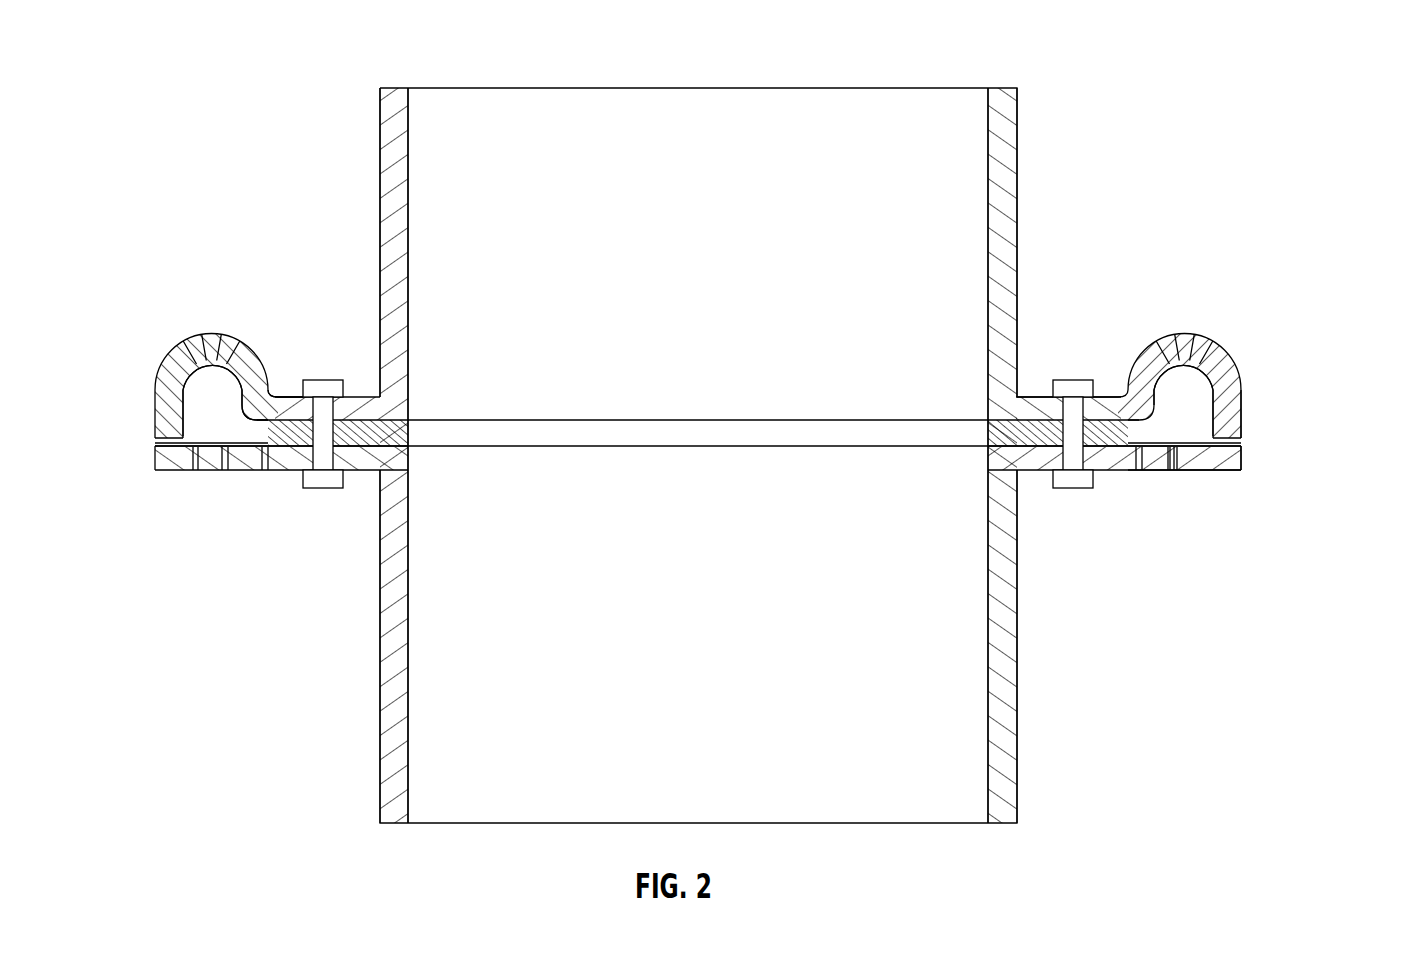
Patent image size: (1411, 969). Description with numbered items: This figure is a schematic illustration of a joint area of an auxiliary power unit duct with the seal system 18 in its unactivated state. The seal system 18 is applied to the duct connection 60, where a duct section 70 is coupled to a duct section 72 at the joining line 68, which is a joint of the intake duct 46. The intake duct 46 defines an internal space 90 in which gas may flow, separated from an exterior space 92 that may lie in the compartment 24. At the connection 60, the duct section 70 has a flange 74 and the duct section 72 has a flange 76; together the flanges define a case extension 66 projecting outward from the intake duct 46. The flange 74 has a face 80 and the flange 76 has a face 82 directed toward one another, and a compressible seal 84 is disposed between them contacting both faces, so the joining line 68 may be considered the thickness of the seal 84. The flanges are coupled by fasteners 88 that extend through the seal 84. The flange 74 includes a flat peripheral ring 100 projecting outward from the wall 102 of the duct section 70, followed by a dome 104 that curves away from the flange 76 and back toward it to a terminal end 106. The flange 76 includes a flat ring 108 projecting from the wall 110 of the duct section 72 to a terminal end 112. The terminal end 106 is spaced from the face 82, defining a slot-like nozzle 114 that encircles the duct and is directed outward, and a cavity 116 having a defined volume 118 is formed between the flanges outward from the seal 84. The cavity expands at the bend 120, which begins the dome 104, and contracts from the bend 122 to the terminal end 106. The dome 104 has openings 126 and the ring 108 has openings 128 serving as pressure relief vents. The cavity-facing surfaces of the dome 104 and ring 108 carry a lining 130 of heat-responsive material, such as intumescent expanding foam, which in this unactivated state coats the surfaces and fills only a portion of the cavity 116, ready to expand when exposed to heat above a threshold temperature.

The seal system 18 is at (1145, 195).
The compartment 24 is at (1320, 154).
The intake duct 46 is at (375, 143).
The duct connection 60 is at (651, 440).
The case extension 66 is at (1207, 318).
The joining line 68 is at (568, 437).
The duct section 70 is at (380, 245).
The duct section 72 is at (380, 745).
The flange 74 is at (1240, 367).
The flange 76 is at (1228, 474).
The face 80 is at (1030, 410).
The face 82 is at (1180, 450).
The seal 84 is at (380, 470).
The fasteners 88 is at (335, 382).
The internal space 90 is at (846, 238).
The exterior space 92 is at (1305, 412).
The ring 100 is at (1103, 395).
The wall 102 is at (1017, 245).
The dome 104 is at (1223, 343).
The terminal end 106 is at (1243, 457).
The ring 108 is at (1127, 460).
The wall 110 is at (1017, 655).
The terminal end 112 is at (1243, 465).
The nozzle 114 is at (155, 443).
The cavity 116 is at (1201, 424).
The volume 118 is at (233, 410).
The bend 120 is at (268, 378).
The bend 122 is at (168, 357).
The openings 126 is at (215, 333).
The openings 128 is at (193, 470).
The lining 130 is at (176, 410).